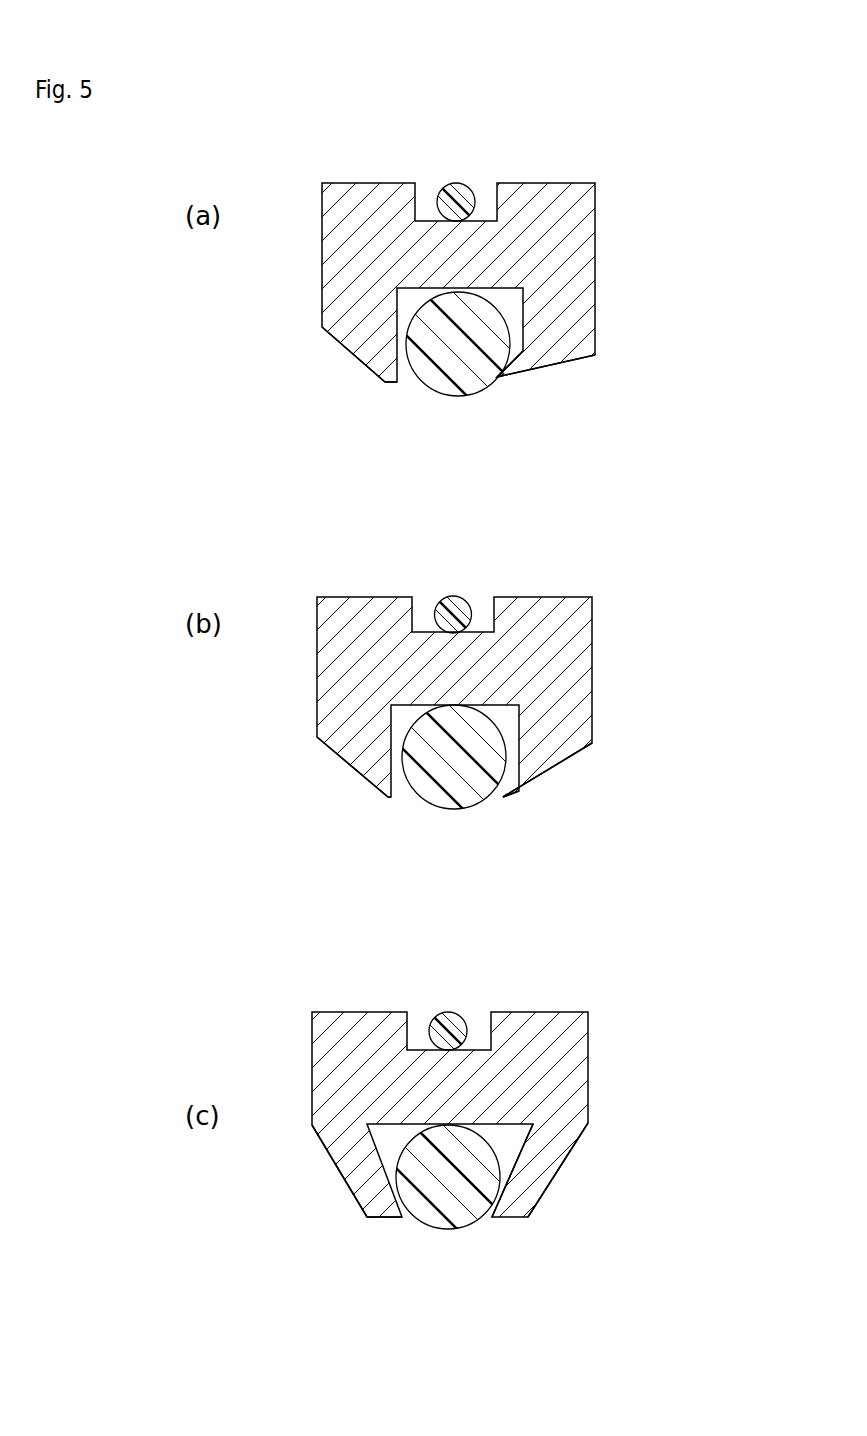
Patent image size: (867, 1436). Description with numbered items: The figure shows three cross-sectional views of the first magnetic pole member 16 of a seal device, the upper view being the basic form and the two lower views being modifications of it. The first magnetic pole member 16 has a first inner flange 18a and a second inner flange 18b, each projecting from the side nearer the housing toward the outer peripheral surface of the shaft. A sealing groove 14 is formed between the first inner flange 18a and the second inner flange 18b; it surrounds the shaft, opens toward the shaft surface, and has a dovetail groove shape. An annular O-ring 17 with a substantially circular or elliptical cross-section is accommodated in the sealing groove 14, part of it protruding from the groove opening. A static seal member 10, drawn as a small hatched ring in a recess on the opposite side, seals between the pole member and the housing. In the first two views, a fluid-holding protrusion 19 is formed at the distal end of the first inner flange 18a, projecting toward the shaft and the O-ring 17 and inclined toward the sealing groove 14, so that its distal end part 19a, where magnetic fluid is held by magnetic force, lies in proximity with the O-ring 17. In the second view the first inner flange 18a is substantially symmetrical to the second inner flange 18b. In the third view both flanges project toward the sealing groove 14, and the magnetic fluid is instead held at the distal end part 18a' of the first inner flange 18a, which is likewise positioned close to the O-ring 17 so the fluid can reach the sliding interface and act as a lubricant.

The static seal member 10 is at (457, 193).
The sealing groove 14 is at (387, 380).
The first magnetic pole member 16 is at (365, 220).
The O-ring 17 is at (432, 386).
The first inner flange 18a is at (636, 802).
The distal end part of the first inner flange 18a' is at (564, 1221).
The second inner flange 18b is at (353, 335).
The fluid-holding protrusion 19 is at (530, 360).
The distal end part of the fluid-holding protrusion 19a is at (500, 382).